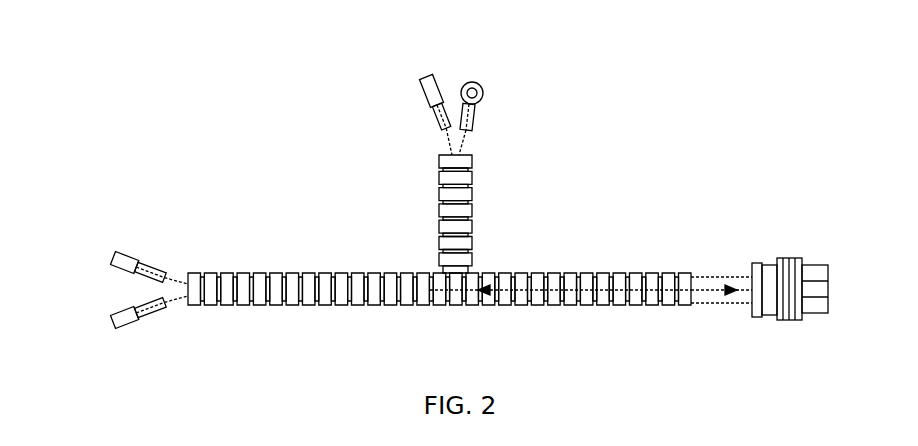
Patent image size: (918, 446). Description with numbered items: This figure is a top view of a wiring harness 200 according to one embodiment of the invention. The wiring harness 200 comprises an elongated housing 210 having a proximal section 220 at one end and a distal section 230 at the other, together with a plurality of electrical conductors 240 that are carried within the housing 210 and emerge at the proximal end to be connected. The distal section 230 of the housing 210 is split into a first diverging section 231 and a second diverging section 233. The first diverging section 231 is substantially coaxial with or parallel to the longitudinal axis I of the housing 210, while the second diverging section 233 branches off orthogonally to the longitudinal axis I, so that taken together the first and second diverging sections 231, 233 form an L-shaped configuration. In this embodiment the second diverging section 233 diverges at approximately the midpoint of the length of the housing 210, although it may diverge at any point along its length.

The wiring harness 200 is at (616, 141).
The housing 210 is at (332, 290).
The proximal section 220 is at (487, 236).
The distal section 230 is at (92, 163).
The first diverging section 231 is at (275, 289).
The second diverging section 233 is at (460, 225).
The electrical conductors 240 is at (708, 302).
The longitudinal axis I is at (573, 290).